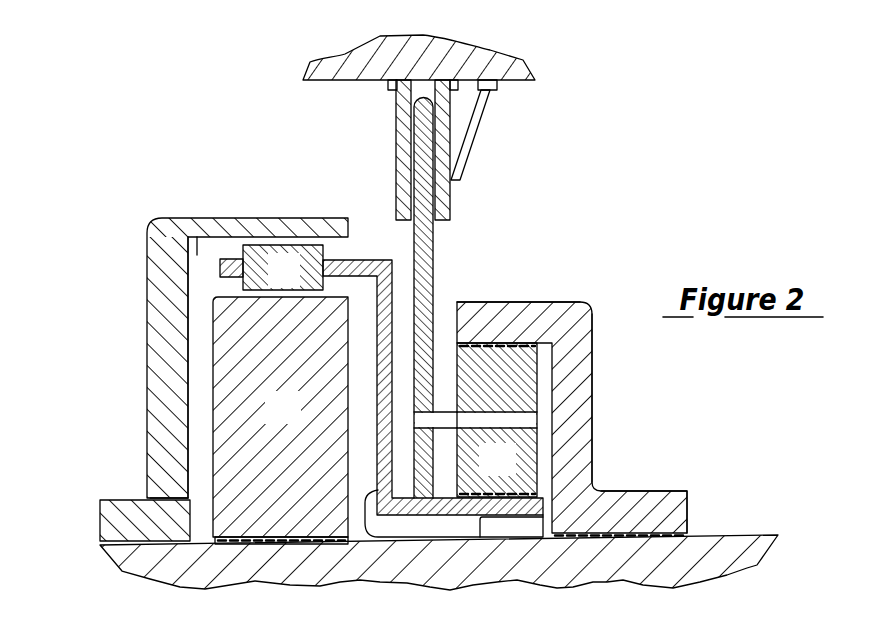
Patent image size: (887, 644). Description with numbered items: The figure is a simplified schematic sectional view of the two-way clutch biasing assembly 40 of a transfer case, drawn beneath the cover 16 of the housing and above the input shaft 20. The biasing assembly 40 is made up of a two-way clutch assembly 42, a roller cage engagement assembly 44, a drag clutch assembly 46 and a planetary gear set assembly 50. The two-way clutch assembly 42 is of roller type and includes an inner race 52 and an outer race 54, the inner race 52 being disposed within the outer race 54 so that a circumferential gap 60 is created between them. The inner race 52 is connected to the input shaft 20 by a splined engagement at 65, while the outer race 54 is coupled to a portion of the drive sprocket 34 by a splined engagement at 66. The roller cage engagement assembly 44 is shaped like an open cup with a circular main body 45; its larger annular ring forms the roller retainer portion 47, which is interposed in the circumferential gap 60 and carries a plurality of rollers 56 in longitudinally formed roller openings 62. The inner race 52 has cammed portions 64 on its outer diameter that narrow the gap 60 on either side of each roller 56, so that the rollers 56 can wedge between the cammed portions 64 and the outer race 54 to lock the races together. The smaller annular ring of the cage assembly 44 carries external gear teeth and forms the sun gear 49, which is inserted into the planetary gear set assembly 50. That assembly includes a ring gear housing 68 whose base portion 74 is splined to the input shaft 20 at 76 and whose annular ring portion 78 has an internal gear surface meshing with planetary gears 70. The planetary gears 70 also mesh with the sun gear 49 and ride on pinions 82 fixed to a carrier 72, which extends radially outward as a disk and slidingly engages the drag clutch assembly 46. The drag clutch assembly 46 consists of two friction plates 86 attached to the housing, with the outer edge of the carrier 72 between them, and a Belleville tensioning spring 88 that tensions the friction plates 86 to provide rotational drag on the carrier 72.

The cover 16 is at (462, 43).
The input shaft 20 is at (360, 580).
The drive sprocket 34 is at (100, 515).
The two-way clutch biasing assembly 40 is at (358, 379).
The two-way clutch assembly 42 is at (189, 379).
The roller cage engagement assembly 44 is at (422, 404).
The main body 45 is at (378, 540).
The drag clutch assembly 46 is at (415, 289).
The roller retainer portion 47 is at (352, 278).
The sun gear 49 is at (483, 540).
The planetary gear set assembly 50 is at (550, 422).
The inner race 52 is at (274, 420).
The outer race 54 is at (147, 230).
The rollers 56 is at (274, 283).
The circumferential gap 60 is at (170, 222).
The roller openings 62 is at (245, 287).
The cammed portions 64 is at (283, 300).
The splined engagement of inner race to input shaft 65 is at (280, 546).
The splined engagement of outer race to drive sprocket 66 is at (170, 496).
The ring gear housing 68 is at (592, 357).
The planetary gears 70 is at (488, 472).
The carrier 72 is at (434, 241).
The base portion 74 is at (592, 426).
The splined engagement of base portion to input shaft 76 is at (625, 538).
The annular ring portion 78 is at (517, 302).
The pinions 82 is at (493, 420).
The friction plates 86 is at (396, 174).
The Belleville tensioning spring 88 is at (471, 137).